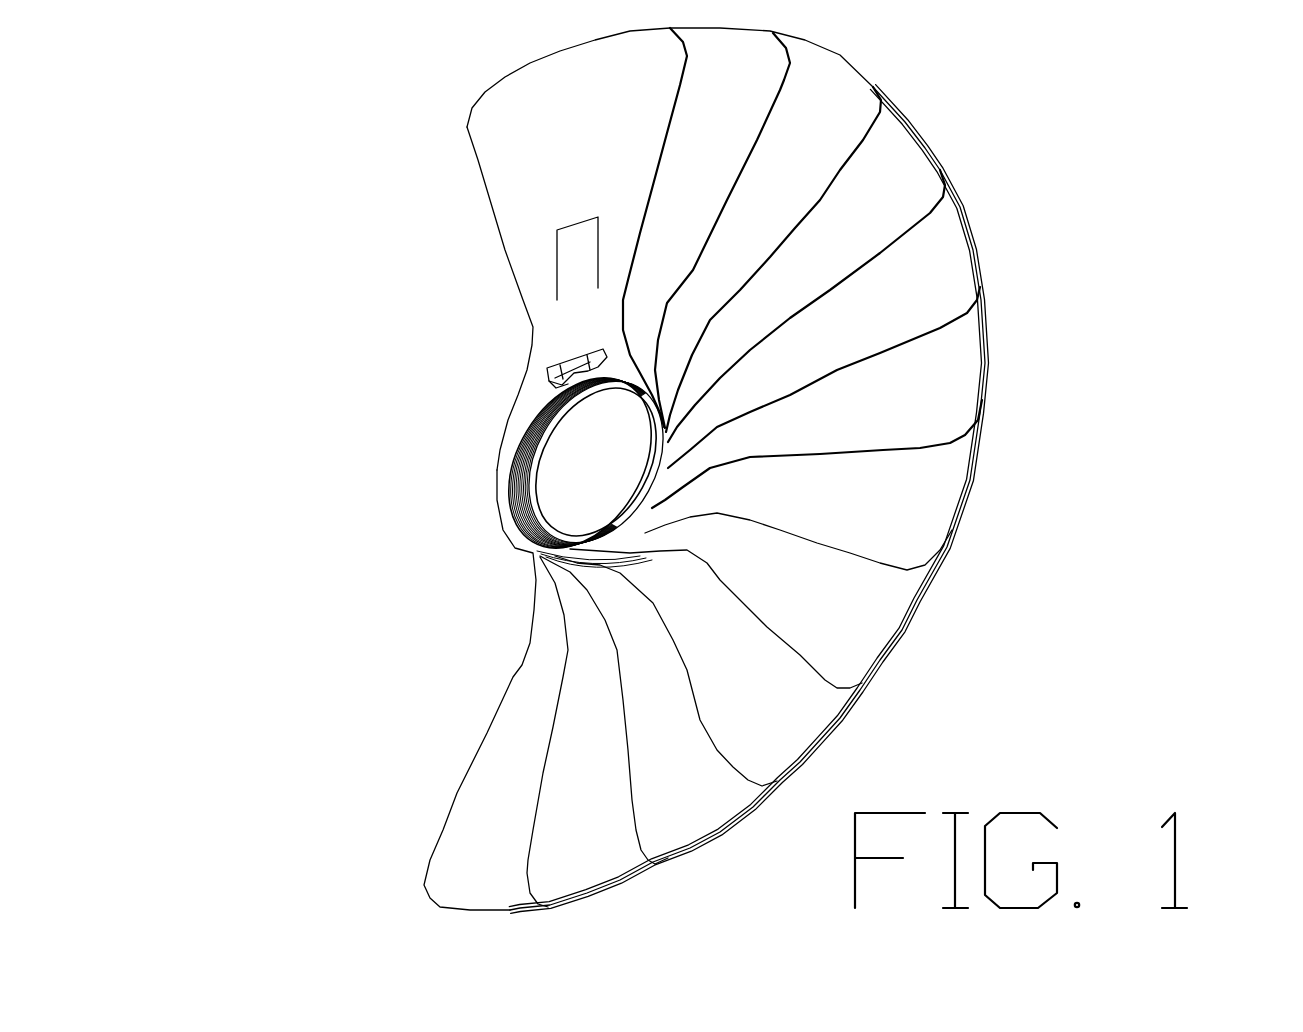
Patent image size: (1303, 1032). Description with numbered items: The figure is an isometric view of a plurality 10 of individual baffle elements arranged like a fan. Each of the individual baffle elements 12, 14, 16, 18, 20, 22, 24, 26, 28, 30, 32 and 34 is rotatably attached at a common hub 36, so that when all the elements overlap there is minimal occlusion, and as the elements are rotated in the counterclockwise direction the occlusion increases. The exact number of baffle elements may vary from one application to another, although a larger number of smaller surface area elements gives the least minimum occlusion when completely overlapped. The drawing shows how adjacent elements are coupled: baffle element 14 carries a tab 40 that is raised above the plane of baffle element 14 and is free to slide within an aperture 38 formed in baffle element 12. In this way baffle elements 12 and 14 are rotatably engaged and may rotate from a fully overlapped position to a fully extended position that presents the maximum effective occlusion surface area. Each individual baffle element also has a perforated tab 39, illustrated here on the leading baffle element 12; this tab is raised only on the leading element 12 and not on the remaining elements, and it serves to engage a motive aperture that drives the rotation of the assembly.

The plurality of individual baffle elements 10 is at (1003, 237).
The baffle element 12 is at (568, 158).
The baffle element 14 is at (717, 157).
The baffle element 16 is at (798, 181).
The baffle element 18 is at (851, 275).
The baffle element 20 is at (875, 353).
The baffle element 22 is at (885, 435).
The baffle element 24 is at (888, 525).
The baffle element 26 is at (843, 618).
The baffle element 28 is at (777, 720).
The baffle element 30 is at (697, 797).
The baffle element 32 is at (602, 853).
The baffle element 34 is at (502, 908).
The hub 36 is at (551, 466).
The aperture 38 is at (556, 368).
The perforated tab 39 is at (573, 260).
The tab 40 is at (578, 356).